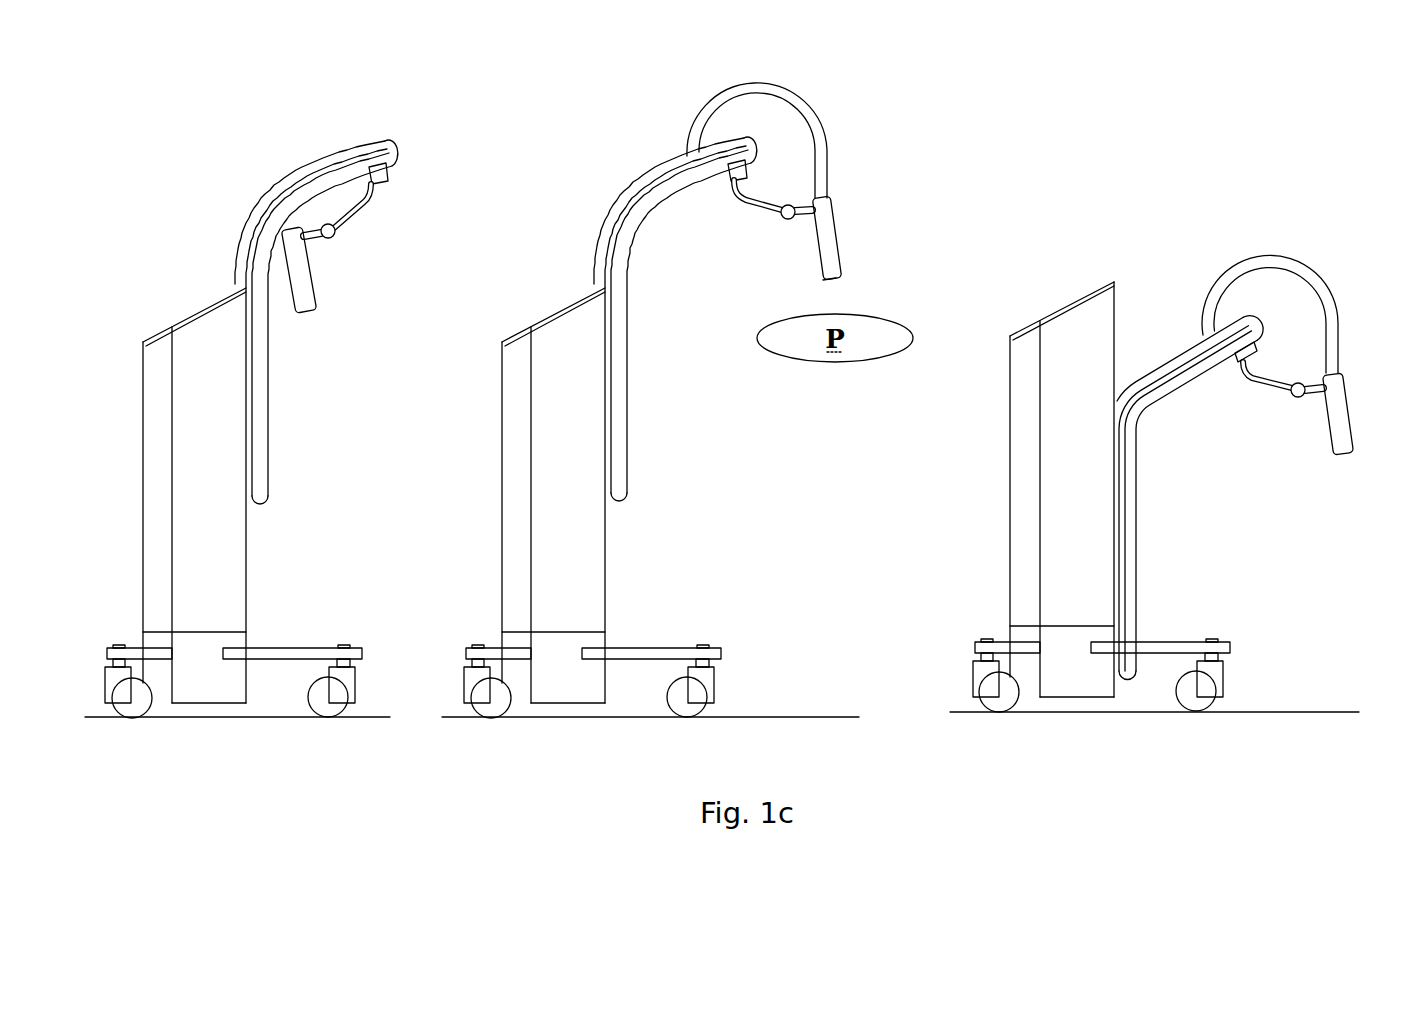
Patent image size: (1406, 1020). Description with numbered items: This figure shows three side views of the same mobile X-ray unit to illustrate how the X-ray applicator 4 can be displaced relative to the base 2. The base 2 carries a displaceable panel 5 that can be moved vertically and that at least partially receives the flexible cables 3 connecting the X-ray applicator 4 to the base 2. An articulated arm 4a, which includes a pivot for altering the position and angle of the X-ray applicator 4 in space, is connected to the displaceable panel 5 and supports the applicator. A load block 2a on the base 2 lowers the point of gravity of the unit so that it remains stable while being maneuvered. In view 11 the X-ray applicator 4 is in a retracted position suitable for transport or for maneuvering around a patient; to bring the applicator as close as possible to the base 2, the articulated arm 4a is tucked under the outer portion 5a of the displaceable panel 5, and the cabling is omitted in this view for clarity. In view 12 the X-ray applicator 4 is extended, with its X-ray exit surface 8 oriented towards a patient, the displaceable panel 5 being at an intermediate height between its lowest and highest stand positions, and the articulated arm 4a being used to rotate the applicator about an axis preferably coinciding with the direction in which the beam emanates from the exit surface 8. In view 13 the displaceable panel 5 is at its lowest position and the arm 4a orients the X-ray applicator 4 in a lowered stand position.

The base 2 is at (157, 581).
The load block 2a is at (208, 683).
The flexible cables 3 is at (827, 135).
The X-ray applicator 4 is at (313, 291).
The articulated arm 4a is at (348, 229).
The displaceable panel 5 is at (269, 402).
The outer portion of the displaceable panel 5a is at (377, 140).
The X-ray exit surface 8 is at (869, 295).
The view 11 is at (237, 420).
The view 12 is at (650, 418).
The view 13 is at (1154, 414).